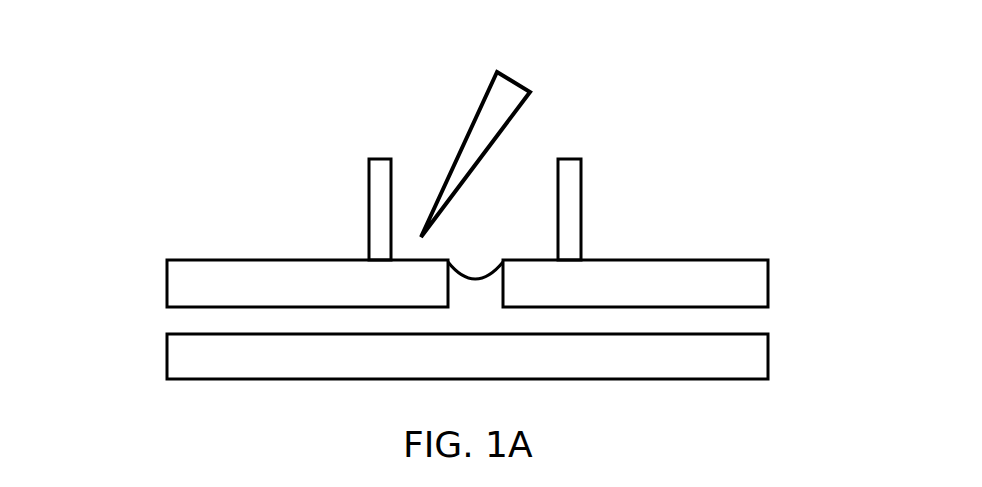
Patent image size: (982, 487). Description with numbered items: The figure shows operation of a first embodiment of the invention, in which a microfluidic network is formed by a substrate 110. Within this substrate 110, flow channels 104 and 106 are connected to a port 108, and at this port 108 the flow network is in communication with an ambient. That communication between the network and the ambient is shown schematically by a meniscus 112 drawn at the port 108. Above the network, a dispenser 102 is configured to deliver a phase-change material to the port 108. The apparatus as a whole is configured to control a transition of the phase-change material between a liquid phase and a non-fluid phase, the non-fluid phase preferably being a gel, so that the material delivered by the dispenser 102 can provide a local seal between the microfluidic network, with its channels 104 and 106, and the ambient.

The dispenser 102 is at (482, 100).
The flow channel 104 is at (185, 321).
The flow channel 106 is at (758, 323).
The port 108 is at (613, 185).
The substrate 110 is at (277, 298).
The meniscus 112 is at (462, 276).